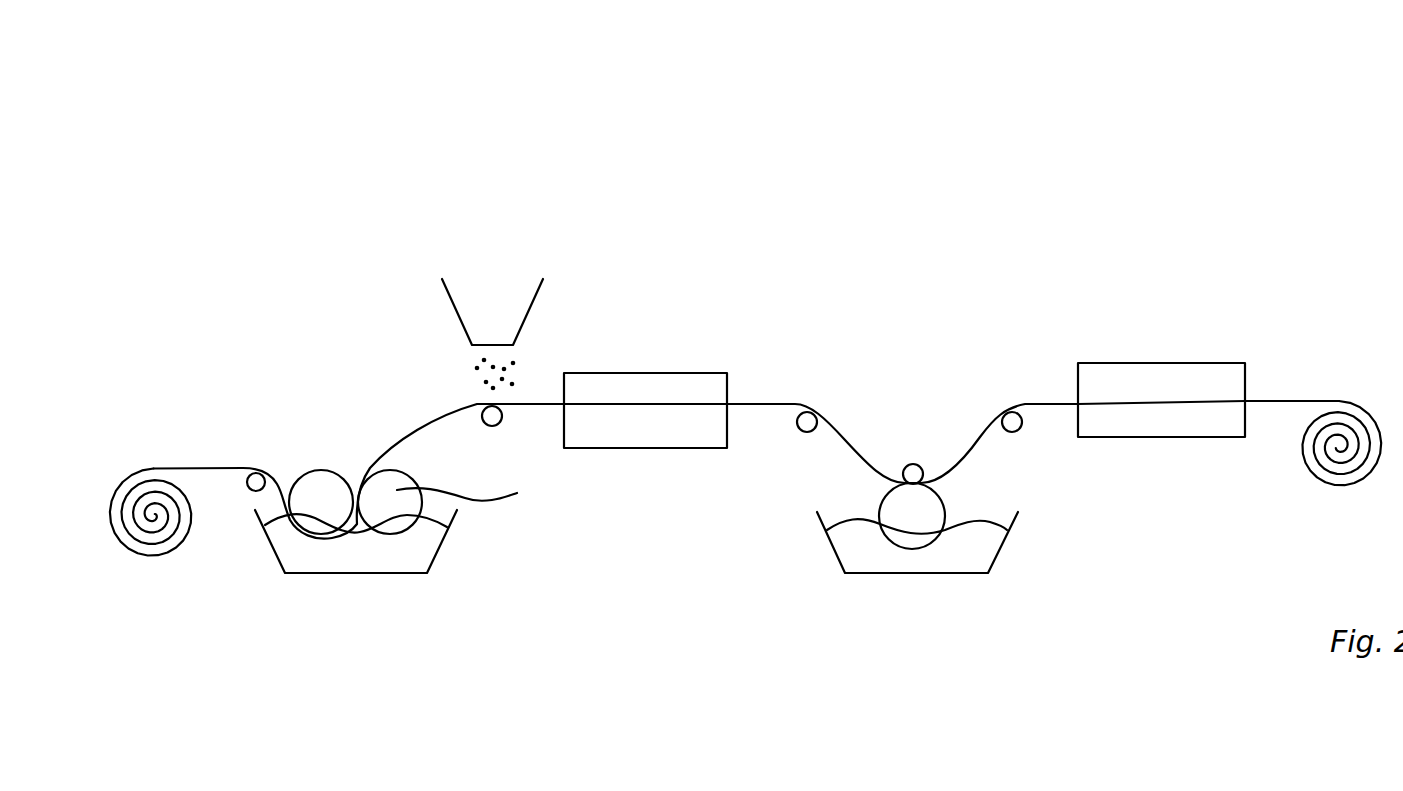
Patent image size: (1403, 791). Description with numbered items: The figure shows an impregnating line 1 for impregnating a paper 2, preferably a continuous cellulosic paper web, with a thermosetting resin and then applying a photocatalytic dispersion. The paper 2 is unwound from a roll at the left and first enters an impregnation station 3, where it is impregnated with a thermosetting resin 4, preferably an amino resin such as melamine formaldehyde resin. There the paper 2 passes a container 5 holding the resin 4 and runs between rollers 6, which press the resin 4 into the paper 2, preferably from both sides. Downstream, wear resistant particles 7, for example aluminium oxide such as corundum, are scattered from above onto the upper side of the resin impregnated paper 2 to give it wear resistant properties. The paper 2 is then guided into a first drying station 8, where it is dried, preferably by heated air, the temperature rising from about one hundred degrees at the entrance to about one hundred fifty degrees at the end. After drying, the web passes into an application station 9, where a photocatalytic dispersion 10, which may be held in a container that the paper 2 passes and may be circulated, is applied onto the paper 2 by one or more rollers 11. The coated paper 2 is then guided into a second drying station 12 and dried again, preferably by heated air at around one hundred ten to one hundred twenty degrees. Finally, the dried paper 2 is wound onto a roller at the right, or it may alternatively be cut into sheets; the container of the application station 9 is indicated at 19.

The impregnating line 1 is at (390, 183).
The paper 2 is at (415, 432).
The impregnation station 3 is at (336, 582).
The thermosetting resin 4 is at (405, 550).
The container 5 is at (278, 563).
The rollers 6 is at (322, 492).
The wear resistant particles 7 is at (514, 376).
The first drying station 8 is at (658, 468).
The application station 9 is at (911, 582).
The photocatalytic dispersion 10 is at (965, 552).
The rollers 11 is at (918, 499).
The second drying station 12 is at (1146, 344).
The second trough 19 is at (837, 568).